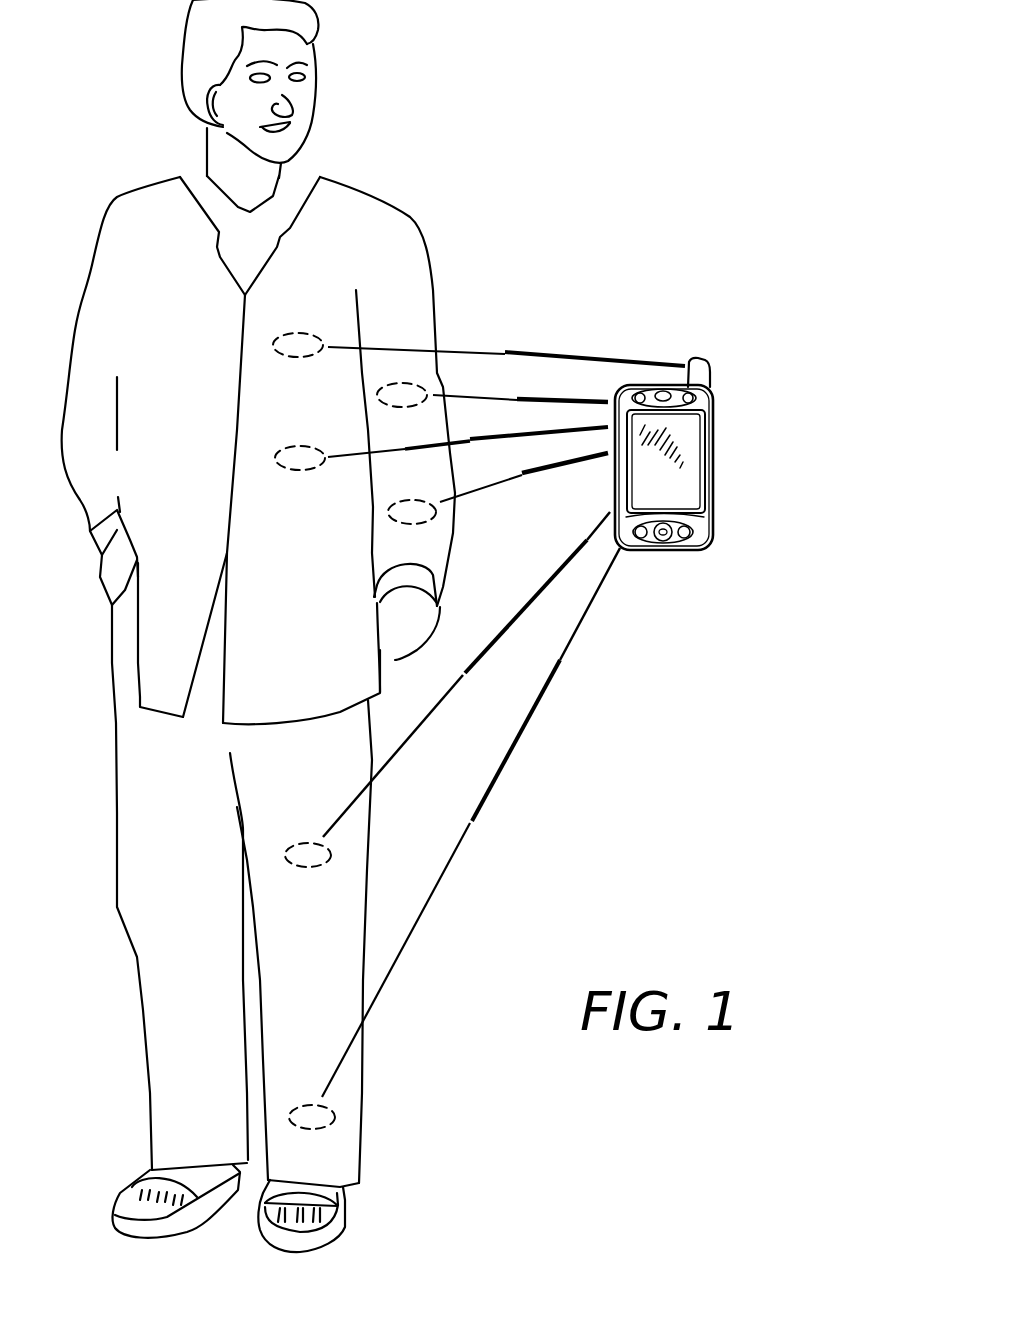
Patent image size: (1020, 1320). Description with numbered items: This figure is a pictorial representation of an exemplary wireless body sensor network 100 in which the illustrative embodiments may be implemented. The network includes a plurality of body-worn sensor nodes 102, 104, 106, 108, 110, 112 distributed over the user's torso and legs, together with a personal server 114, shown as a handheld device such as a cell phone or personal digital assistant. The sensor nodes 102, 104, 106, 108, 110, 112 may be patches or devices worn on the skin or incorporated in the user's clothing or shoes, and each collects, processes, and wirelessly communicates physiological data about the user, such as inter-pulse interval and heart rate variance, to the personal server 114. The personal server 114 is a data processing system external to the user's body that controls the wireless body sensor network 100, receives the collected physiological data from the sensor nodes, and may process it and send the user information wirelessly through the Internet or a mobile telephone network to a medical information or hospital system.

The wireless body sensor network 100 is at (537, 97).
The sensor node 102 is at (297, 332).
The sensor node 104 is at (377, 394).
The sensor node 106 is at (275, 462).
The sensor node 108 is at (388, 511).
The sensor node 110 is at (331, 858).
The sensor node 112 is at (335, 1116).
The personal server 114 is at (717, 453).